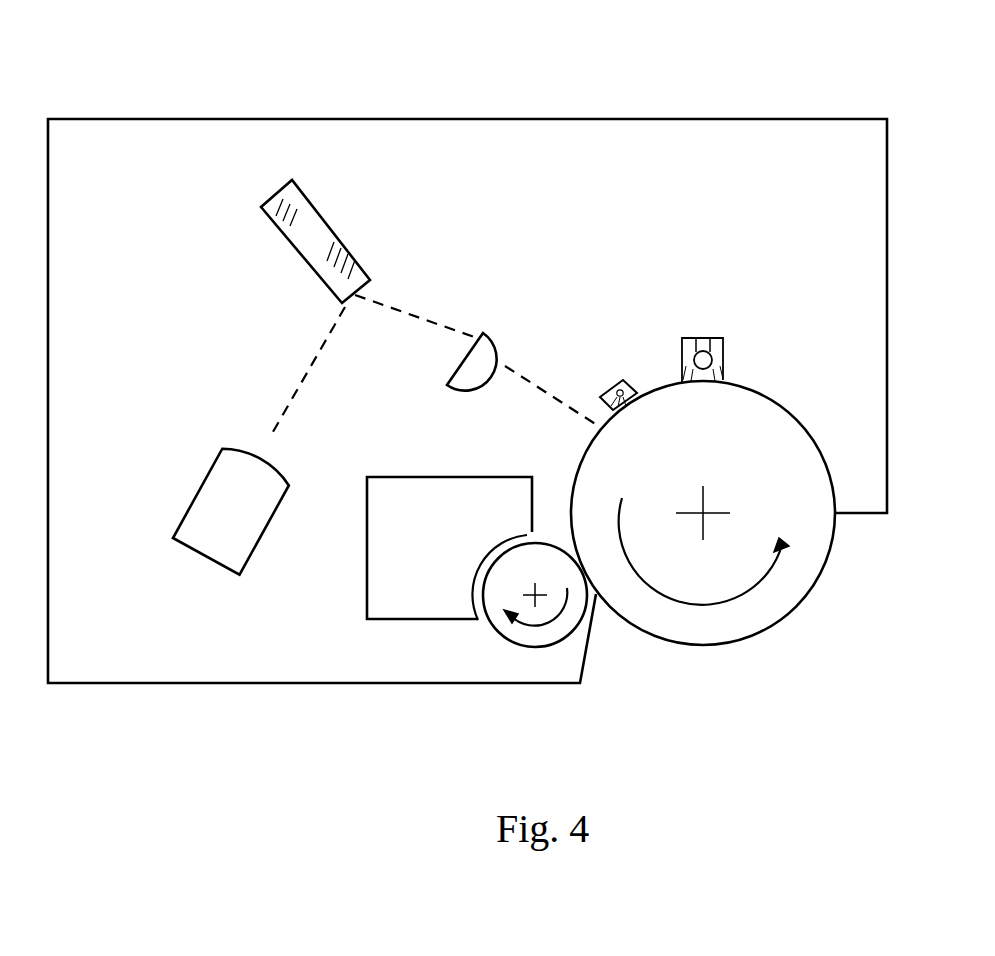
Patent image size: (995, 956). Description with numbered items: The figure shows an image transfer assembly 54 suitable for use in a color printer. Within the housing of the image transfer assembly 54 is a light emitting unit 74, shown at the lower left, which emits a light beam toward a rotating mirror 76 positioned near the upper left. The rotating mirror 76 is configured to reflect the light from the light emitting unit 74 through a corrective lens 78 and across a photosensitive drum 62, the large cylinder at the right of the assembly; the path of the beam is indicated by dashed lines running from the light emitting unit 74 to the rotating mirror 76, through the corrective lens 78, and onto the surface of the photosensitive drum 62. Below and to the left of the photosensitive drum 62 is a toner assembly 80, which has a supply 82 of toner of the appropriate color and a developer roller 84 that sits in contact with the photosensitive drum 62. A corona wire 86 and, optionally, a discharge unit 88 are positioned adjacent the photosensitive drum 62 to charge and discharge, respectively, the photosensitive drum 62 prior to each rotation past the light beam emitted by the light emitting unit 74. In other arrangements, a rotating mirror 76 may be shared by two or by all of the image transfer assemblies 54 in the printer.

The image transfer assembly 54 is at (242, 95).
The photosensitive drum 62 is at (795, 412).
The light emitting unit 74 is at (227, 572).
The rotating mirror 76 is at (279, 188).
The corrective lens 78 is at (484, 333).
The toner assembly 80 is at (560, 626).
The supply of toner 82 is at (445, 554).
The developer roller 84 is at (575, 630).
The corona wire 86 is at (622, 380).
The discharge unit 88 is at (710, 336).